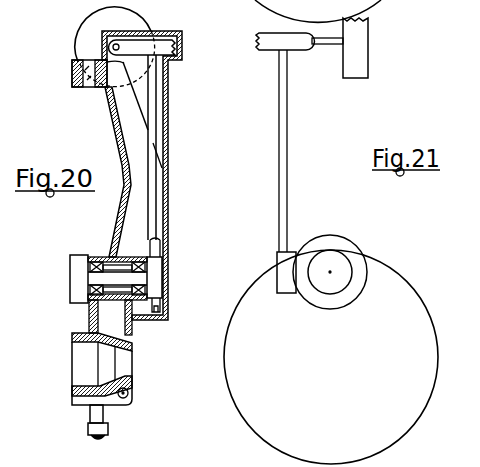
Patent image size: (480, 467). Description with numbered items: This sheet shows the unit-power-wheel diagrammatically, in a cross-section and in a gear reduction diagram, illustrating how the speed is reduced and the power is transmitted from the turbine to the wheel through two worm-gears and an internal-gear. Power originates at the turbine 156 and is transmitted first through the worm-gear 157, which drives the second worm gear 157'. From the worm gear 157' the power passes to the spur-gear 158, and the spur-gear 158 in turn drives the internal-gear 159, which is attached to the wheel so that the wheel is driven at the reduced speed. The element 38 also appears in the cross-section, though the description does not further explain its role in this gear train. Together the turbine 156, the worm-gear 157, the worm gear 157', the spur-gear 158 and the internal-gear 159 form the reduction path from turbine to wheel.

In FIG. 20, the lever arm 38 is at (140, 156).
In FIG. 20, the turbine 156 is at (115, 47).
In FIG. 21, the turbine 156 is at (357, 52).
In FIG. 20, the worm-gear 157 is at (171, 43).
In FIG. 21, the worm-gear 157 is at (294, 59).
In FIG. 20, the worm gear 157' is at (110, 273).
In FIG. 21, the worm gear 157' is at (313, 171).
In FIG. 20, the spur-gear 158 is at (78, 278).
In FIG. 21, the spur-gear 158 is at (352, 278).
In FIG. 21, the internal-gear 159 is at (225, 353).